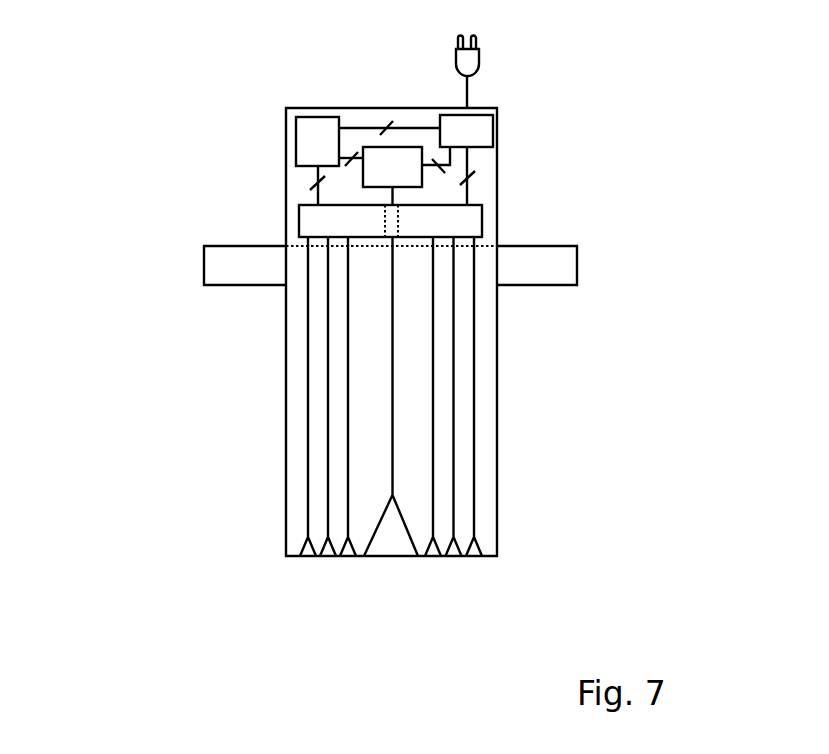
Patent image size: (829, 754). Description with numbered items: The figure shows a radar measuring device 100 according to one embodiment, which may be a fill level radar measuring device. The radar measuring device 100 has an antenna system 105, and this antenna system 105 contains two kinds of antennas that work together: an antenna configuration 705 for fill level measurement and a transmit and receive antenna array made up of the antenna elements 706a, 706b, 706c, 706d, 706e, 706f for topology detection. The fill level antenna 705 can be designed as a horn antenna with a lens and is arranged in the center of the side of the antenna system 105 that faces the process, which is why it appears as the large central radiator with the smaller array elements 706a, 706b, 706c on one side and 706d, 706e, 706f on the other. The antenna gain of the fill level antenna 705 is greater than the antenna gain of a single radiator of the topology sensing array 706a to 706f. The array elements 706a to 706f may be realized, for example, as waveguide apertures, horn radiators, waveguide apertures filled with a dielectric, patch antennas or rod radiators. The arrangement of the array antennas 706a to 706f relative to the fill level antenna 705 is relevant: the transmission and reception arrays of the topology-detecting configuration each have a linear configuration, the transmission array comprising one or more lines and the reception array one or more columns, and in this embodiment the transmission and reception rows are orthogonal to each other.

The radar measuring device 100 is at (208, 86).
The antenna system 105 is at (497, 423).
The antenna configuration for level measurement 705 is at (391, 558).
The antenna element of transmit and receive antenna array 706a is at (307, 558).
The antenna element of transmit and receive antenna array 706b is at (330, 558).
The antenna element of transmit and receive antenna array 706c is at (352, 558).
The antenna element of transmit and receive antenna array 706d is at (433, 558).
The antenna element of transmit and receive antenna array 706e is at (454, 558).
The antenna element of transmit and receive antenna array 706f is at (476, 558).